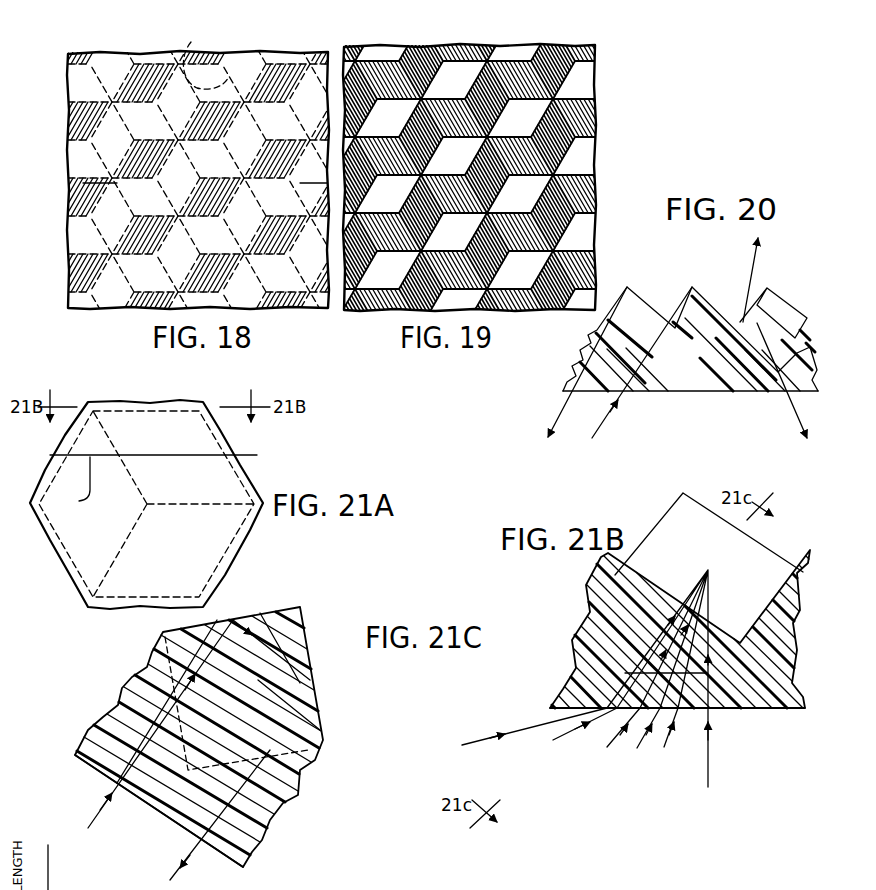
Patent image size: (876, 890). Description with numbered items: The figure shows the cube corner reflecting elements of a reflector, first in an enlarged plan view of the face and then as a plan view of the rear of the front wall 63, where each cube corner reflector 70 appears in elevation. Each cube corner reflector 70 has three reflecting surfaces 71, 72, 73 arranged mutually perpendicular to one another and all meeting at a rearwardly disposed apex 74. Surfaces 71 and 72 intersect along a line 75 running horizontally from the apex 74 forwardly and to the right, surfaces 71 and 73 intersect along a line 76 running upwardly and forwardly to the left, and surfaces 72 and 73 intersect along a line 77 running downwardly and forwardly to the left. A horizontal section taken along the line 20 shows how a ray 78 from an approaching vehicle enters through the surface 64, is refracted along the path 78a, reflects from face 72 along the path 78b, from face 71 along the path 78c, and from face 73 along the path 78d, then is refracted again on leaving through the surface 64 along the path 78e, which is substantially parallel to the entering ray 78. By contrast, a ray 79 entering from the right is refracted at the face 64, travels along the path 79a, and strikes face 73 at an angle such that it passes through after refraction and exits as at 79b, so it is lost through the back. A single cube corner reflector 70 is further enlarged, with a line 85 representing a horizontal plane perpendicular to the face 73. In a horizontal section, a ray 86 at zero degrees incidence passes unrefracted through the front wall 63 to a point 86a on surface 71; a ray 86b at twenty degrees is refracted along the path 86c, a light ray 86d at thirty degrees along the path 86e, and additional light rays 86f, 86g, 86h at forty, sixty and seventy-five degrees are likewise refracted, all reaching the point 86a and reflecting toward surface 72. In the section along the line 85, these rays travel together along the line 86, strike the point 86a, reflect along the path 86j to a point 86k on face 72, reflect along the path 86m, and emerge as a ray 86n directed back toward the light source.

In FIG. 18, the section line 20 is at (100, 180).
In FIG. 18, the front wall 63 is at (82, 93).
In FIG. 19, the front wall 63 is at (598, 61).
In FIG. 20, the front wall 63 is at (578, 372).
In FIG. 21A, the front wall 63 is at (146, 504).
In FIG. 21B, the front wall 63 is at (775, 655).
In FIG. 21C, the front wall 63 is at (290, 803).
In FIG. 20, the surface 64 is at (703, 393).
In FIG. 21B, the surface 64 is at (750, 710).
In FIG. 21C, the surface 64 is at (150, 803).
In FIG. 19, the cube corner reflector 70 is at (568, 128).
In FIG. 20, the cube corner reflector 70 is at (649, 282).
In FIG. 21A, the cube corner reflector 70 is at (248, 483).
In FIG. 18, the reflecting surface 71 is at (232, 60).
In FIG. 19, the reflecting surface 71 is at (446, 76).
In FIG. 20, the reflecting surface 71 is at (778, 322).
In FIG. 21A, the reflecting surface 71 is at (178, 422).
In FIG. 21B, the reflecting surface 71 is at (740, 593).
In FIG. 21C, the reflecting surface 71 is at (267, 610).
In FIG. 18, the reflecting surface 72 is at (238, 118).
In FIG. 19, the reflecting surface 72 is at (440, 117).
In FIG. 21A, the reflecting surface 72 is at (202, 545).
In FIG. 21C, the reflecting surface 72 is at (320, 695).
In FIG. 18, the reflecting surface 73 is at (151, 60).
In FIG. 19, the reflecting surface 73 is at (497, 60).
In FIG. 20, the reflecting surface 73 is at (622, 292).
In FIG. 21A, the reflecting surface 73 is at (73, 472).
In FIG. 21B, the reflecting surface 73 is at (657, 524).
In FIG. 18, the apex 74 is at (207, 60).
In FIG. 19, the apex 74 is at (452, 87).
In FIG. 20, the apex 74 is at (627, 287).
In FIG. 21A, the apex 74 is at (150, 500).
In FIG. 21B, the apex 74 is at (683, 493).
In FIG. 18, the line 75 is at (273, 58).
In FIG. 19, the line 75 is at (425, 57).
In FIG. 20, the line 75 is at (788, 290).
In FIG. 21A, the line 75 is at (187, 498).
In FIG. 21B, the line 75 is at (767, 542).
In FIG. 21C, the line 75 is at (300, 607).
In FIG. 18, the line 76 is at (193, 52).
In FIG. 19, the line 76 is at (478, 80).
In FIG. 21A, the line 76 is at (110, 440).
In FIG. 18, the line 77 is at (190, 120).
In FIG. 19, the line 77 is at (497, 110).
In FIG. 21A, the line 77 is at (112, 563).
In FIG. 20, the ray 78 is at (620, 413).
In FIG. 20, the refracted path 78a is at (652, 393).
In FIG. 20, the path 78b is at (705, 345).
In FIG. 20, the path 78c is at (592, 344).
In FIG. 20, the path 78d is at (630, 362).
In FIG. 20, the path 78e is at (566, 404).
In FIG. 20, the ray 79 is at (800, 412).
In FIG. 20, the path 79a is at (822, 345).
In FIG. 20, the exit path 79b is at (740, 273).
In FIG. 21A, the line 85 is at (74, 486).
In FIG. 21B, the ray 86 is at (710, 748).
In FIG. 21C, the ray 86 is at (88, 816).
In FIG. 21B, the point 86a is at (715, 566).
In FIG. 21C, the point 86a is at (236, 622).
In FIG. 21B, the ray 86b is at (673, 730).
In FIG. 21B, the path 86c is at (707, 673).
In FIG. 21B, the light ray 86d is at (640, 722).
In FIG. 21B, the path 86e is at (633, 673).
In FIG. 21B, the light ray 86f is at (578, 757).
In FIG. 21B, the light ray 86g is at (553, 752).
In FIG. 21B, the light ray 86h is at (510, 733).
In FIG. 21C, the path 86j is at (267, 640).
In FIG. 21C, the point 86k is at (300, 683).
In FIG. 21C, the path 86m is at (320, 730).
In FIG. 21C, the ray 86n is at (193, 855).